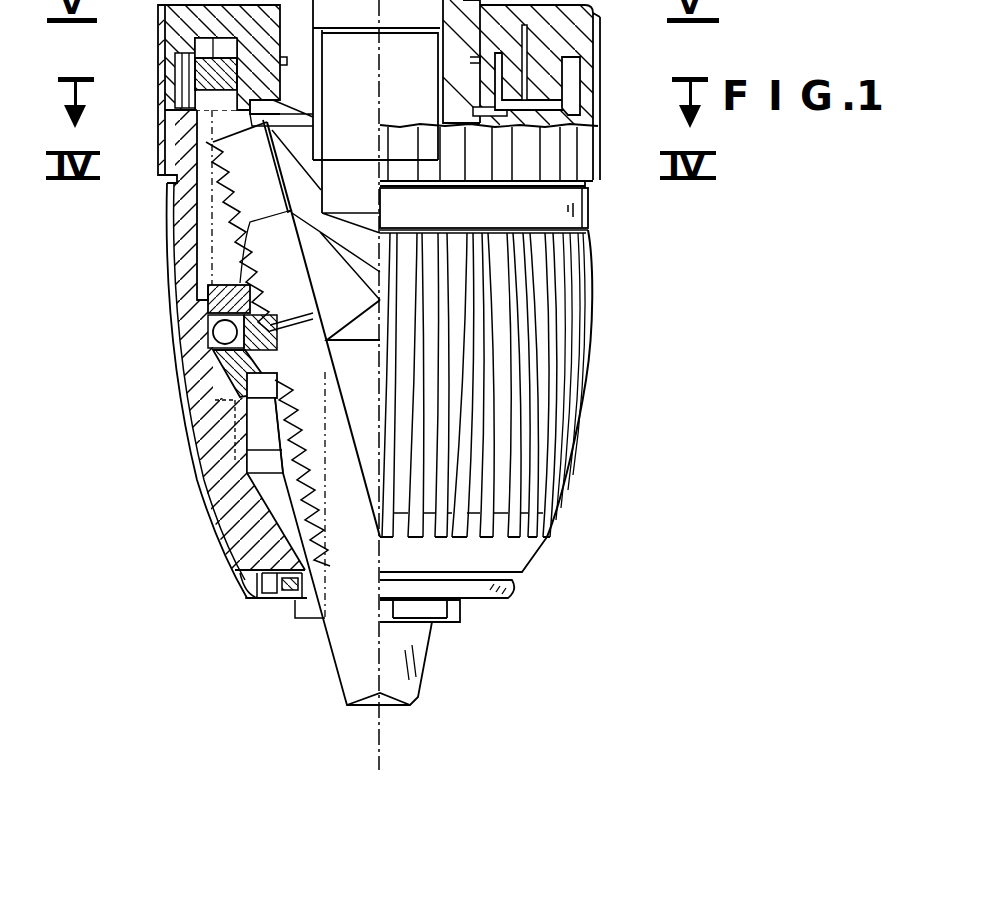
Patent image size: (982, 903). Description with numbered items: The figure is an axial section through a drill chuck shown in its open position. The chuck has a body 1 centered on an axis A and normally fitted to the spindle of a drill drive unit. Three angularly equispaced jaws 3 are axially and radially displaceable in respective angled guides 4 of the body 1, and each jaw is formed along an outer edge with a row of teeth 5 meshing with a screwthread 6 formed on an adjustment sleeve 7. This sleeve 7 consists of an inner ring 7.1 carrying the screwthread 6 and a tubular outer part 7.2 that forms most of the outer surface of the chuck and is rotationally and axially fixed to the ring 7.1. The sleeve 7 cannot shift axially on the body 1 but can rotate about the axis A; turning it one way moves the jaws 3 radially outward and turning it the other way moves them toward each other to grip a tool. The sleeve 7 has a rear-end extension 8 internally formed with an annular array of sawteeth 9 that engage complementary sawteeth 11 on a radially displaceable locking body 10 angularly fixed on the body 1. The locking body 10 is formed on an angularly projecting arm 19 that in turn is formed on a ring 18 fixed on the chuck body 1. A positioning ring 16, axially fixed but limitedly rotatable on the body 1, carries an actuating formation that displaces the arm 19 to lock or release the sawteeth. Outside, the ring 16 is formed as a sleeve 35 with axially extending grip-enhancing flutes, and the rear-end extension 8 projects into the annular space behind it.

The body 1 is at (320, 228).
The jaws 3 is at (353, 667).
The angled guides 4 is at (283, 266).
The row of teeth 5 is at (312, 488).
The screwthread 6 is at (213, 350).
The adjustment sleeve 7 is at (592, 372).
The inner ring 7.1 is at (207, 385).
The tubular outer part 7.2 is at (207, 435).
The rear-end extension 8 is at (178, 112).
The sawteeth 9 is at (192, 90).
The locking body 10 is at (170, 2).
The sawteeth 11 is at (198, 80).
The positioning ring 16 is at (583, 32).
The ring 18 is at (253, 33).
The arm 19 is at (218, 72).
The sleeve 35 is at (585, 103).
The axis A is at (380, 723).